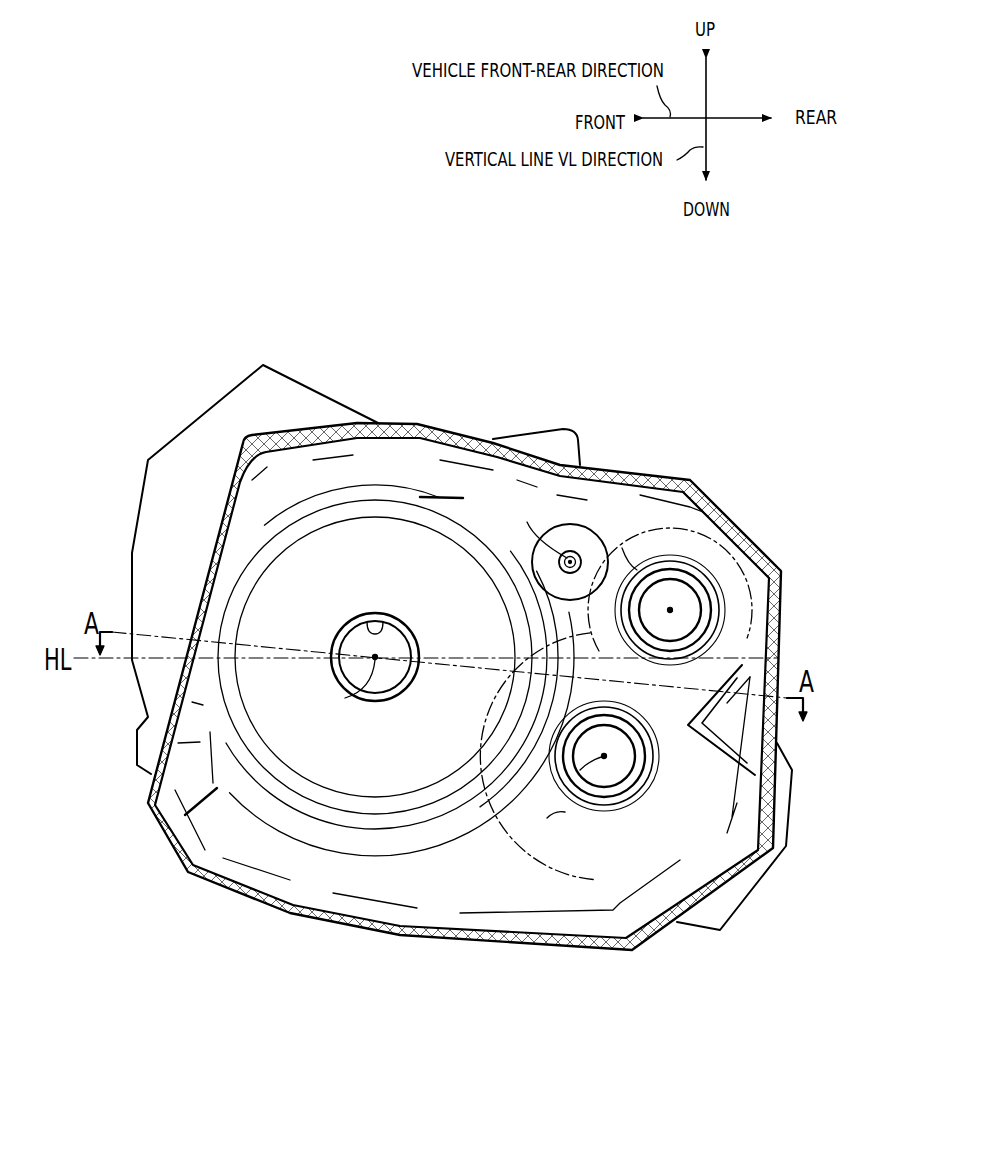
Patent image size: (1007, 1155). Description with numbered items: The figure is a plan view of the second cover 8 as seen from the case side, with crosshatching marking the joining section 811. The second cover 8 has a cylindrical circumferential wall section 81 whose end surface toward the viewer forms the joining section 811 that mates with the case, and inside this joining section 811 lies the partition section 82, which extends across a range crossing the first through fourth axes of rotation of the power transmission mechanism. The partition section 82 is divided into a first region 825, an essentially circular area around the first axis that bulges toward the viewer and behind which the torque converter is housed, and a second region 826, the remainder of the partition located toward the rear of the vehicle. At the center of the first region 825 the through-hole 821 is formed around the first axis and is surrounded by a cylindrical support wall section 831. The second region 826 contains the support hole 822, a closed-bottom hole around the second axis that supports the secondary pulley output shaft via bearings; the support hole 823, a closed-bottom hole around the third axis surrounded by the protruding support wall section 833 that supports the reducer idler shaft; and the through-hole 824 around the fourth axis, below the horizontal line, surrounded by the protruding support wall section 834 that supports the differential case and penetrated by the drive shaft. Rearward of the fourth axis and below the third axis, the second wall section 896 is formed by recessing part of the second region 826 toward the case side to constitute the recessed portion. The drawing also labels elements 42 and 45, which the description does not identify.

The second cover 8 is at (194, 352).
The housing 42 is at (787, 583).
The bracket 45 is at (780, 847).
The circumferential wall section 81 is at (417, 457).
The joining section 811 is at (647, 943).
The partition section 82 is at (540, 366).
The through-hole 821 is at (375, 620).
The support hole 822 is at (588, 545).
The support hole 823 is at (670, 610).
The through-hole 824 is at (553, 762).
The first region 825 is at (410, 540).
The second region 826 is at (490, 497).
The support wall section 831 is at (403, 626).
The support wall section 833 is at (710, 594).
The support wall section 834 is at (606, 800).
The second wall section 896 is at (757, 727).